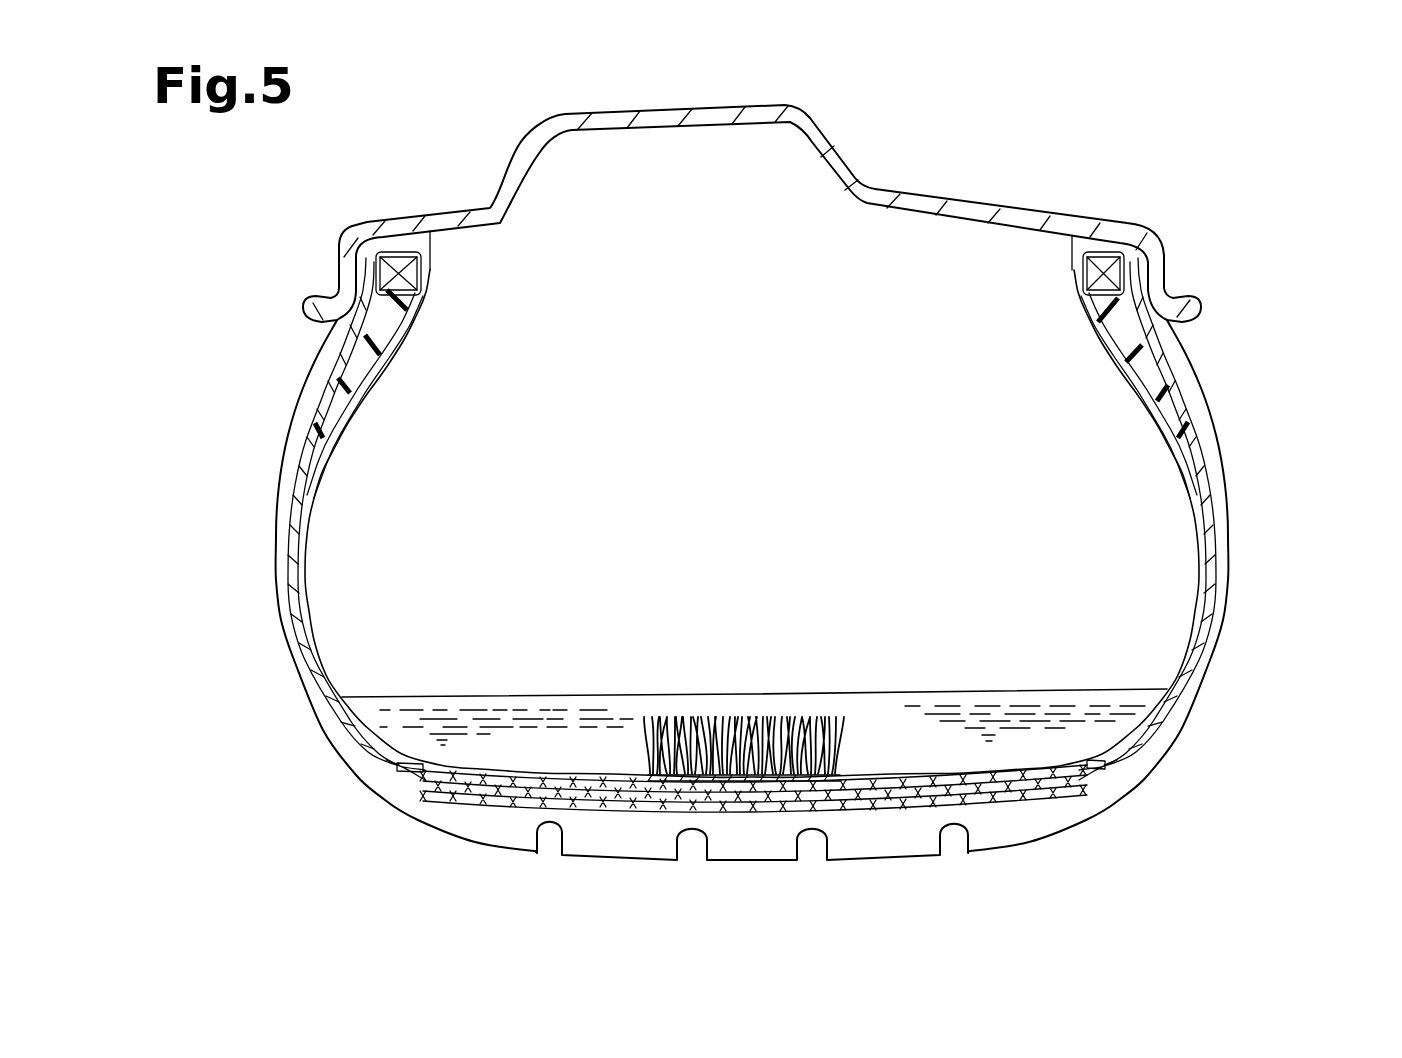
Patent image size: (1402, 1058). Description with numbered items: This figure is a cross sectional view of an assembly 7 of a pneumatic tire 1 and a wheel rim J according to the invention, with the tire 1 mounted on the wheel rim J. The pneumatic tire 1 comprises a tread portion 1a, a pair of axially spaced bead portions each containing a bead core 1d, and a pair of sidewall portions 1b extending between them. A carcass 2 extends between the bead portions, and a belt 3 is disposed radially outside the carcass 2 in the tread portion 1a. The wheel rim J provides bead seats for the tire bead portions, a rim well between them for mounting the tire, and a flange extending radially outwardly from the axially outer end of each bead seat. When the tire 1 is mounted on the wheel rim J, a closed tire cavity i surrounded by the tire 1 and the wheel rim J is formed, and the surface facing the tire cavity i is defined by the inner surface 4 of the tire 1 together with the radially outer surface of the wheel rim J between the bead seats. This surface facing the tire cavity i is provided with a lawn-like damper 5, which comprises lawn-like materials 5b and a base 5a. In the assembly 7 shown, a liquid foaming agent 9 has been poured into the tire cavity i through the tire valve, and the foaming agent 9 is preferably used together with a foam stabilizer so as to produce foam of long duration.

The pneumatic tire 1 is at (1212, 369).
The tread portion 1a is at (720, 880).
The sidewall portions 1b is at (254, 579).
The bead core 1d is at (418, 279).
The carcass 2 is at (367, 392).
The belt 3 is at (513, 780).
The inner surface 4 is at (950, 773).
The lawn-like damper 5 is at (897, 548).
The base 5a is at (838, 775).
The lawn-like materials 5b is at (775, 717).
The assembly 7 is at (1294, 249).
The liquid foaming agent 9 is at (636, 712).
The wheel rim J is at (1199, 268).
The tire cavity i is at (760, 450).